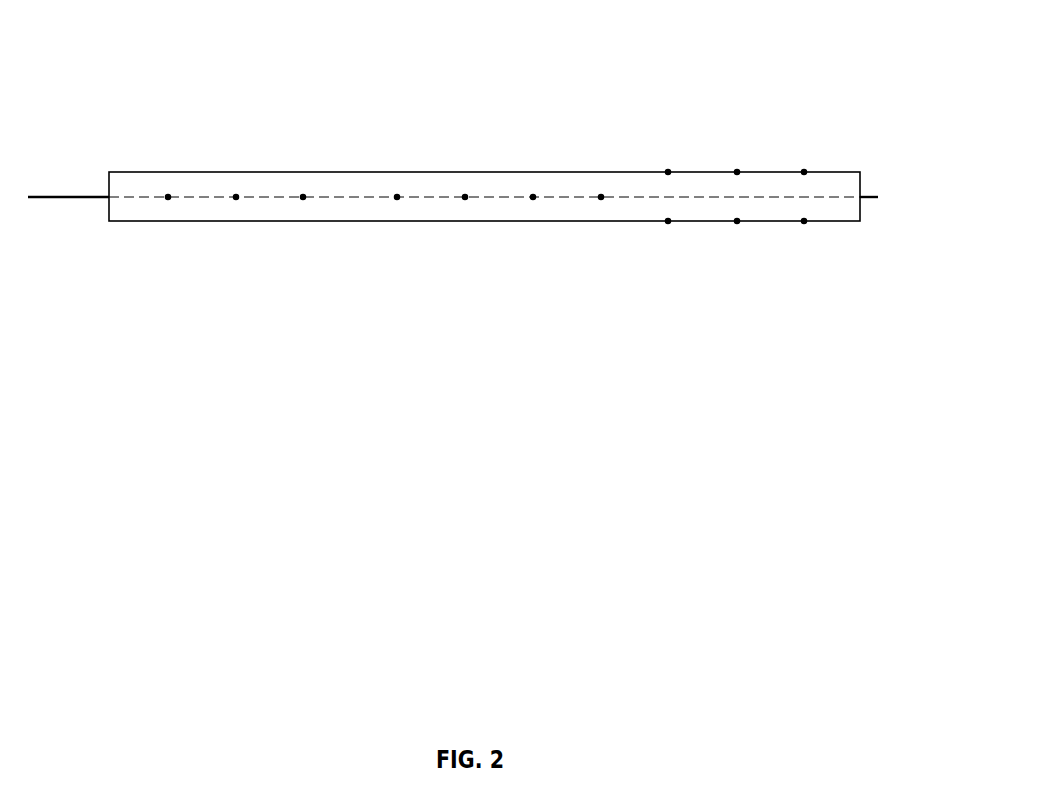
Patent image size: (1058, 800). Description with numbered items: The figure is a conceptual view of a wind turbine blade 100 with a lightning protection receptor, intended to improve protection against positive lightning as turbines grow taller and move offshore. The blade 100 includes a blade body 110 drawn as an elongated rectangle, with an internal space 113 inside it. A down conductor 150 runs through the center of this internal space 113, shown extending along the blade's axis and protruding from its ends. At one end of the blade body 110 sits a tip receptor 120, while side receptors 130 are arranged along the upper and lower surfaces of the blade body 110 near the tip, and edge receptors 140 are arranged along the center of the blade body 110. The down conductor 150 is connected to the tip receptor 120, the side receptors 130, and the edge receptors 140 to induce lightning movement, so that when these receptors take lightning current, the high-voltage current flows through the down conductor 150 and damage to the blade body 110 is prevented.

The wind turbine blade 100 is at (75, 50).
The blade body 110 is at (137, 170).
The internal space 113 is at (502, 183).
The tip receptor 120 is at (868, 192).
The side receptor 130 is at (737, 171).
The edge receptor 140 is at (235, 196).
The down conductor 150 is at (58, 199).